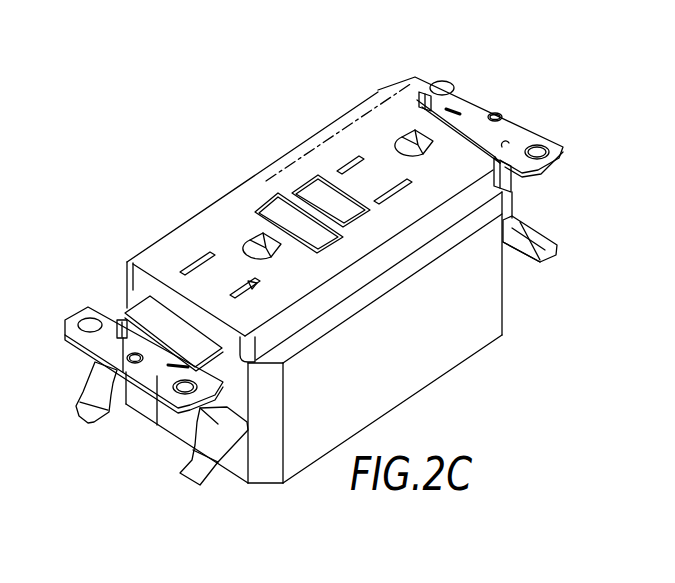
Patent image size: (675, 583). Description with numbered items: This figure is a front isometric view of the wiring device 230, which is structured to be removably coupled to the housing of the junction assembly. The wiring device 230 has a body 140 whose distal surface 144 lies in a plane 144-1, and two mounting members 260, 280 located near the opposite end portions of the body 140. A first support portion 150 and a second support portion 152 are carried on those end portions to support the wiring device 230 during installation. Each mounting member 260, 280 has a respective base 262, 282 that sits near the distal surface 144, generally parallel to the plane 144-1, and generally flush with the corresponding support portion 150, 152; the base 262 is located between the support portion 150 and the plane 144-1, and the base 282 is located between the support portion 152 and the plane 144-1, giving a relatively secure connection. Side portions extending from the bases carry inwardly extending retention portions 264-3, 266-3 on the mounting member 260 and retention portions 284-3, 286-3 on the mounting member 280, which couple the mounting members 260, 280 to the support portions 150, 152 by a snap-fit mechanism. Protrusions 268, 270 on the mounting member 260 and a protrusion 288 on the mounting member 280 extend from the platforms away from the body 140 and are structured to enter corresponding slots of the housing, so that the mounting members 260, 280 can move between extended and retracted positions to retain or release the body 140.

The wiring device 230 is at (182, 175).
The body 140 is at (316, 132).
The distal surface 144 is at (257, 178).
The plane 144-1 is at (445, 60).
The retention portion 264-3 is at (257, 285).
The base 262 is at (157, 328).
The retention portion 266-3 is at (118, 327).
The first support portion 150 is at (63, 352).
The protrusion 270 is at (71, 428).
The protrusion 268 is at (201, 496).
The mounting member 260 is at (159, 483).
The second support portion 152 is at (569, 134).
The retention portion 286-3 is at (428, 92).
The base 282 is at (462, 132).
The retention portion 284-3 is at (514, 172).
The mounting member 280 is at (574, 237).
The protrusion 288 is at (547, 285).